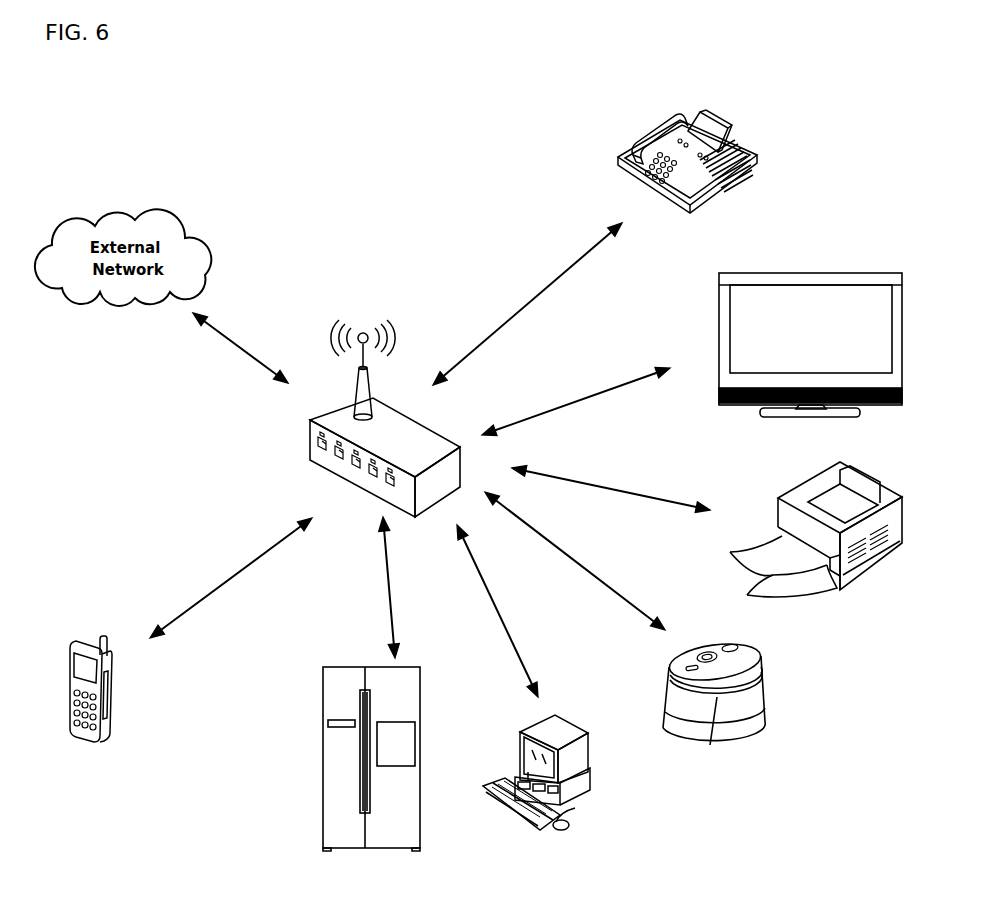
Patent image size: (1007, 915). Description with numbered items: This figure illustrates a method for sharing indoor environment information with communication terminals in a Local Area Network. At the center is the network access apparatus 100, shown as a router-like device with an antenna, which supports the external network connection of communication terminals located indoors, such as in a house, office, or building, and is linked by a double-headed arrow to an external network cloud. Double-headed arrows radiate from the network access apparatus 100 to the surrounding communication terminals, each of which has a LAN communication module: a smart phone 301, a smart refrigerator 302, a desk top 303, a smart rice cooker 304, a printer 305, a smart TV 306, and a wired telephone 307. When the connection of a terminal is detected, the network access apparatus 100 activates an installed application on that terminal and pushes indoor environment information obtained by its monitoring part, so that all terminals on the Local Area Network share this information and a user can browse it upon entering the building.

The network access apparatus 100 is at (310, 421).
The smart phone 301 is at (110, 732).
The smart refrigerator 302 is at (410, 838).
The desk top 303 is at (583, 758).
The smart rice cooker 304 is at (757, 702).
The printer 305 is at (893, 545).
The smart TV 306 is at (811, 273).
The wired telephone 307 is at (728, 132).